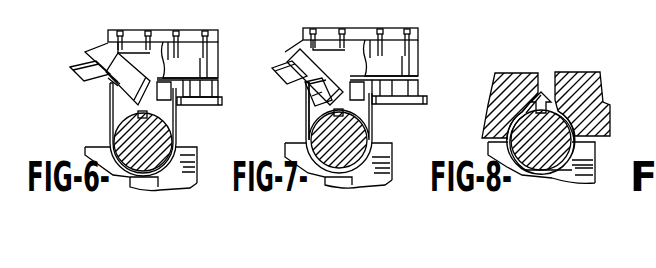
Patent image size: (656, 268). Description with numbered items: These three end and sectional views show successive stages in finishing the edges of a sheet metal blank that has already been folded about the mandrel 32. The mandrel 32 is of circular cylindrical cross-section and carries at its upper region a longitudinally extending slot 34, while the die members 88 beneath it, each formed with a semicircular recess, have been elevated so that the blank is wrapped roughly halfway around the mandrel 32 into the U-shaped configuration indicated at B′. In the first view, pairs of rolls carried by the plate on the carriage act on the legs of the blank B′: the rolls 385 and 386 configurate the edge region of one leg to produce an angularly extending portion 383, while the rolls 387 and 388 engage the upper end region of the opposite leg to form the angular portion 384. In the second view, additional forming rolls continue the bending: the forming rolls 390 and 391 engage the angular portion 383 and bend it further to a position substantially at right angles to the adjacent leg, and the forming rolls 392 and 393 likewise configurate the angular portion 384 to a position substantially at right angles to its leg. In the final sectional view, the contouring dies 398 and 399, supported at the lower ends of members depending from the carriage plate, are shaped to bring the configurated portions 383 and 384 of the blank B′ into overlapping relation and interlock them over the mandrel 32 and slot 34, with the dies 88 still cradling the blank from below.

In FIG. 6, the mandrel 32 is at (163, 136).
In FIG. 7, the mandrel 32 is at (362, 137).
In FIG. 8, the mandrel 32 is at (572, 133).
In FIG. 7, the longitudinally extending slot 34 is at (308, 132).
In FIG. 6, the die members 88 is at (180, 146).
In FIG. 7, the die members 88 is at (287, 152).
In FIG. 8, the die members 88 is at (587, 152).
In FIG. 6, the U-shaped blank B′ is at (110, 123).
In FIG. 7, the U-shaped blank B′ is at (373, 115).
In FIG. 8, the U-shaped blank B′ is at (597, 101).
In FIG. 6, the angular portion 383 is at (99, 69).
In FIG. 8, the angular portion 383 is at (539, 66).
In FIG. 6, the angular portion 384 is at (210, 86).
In FIG. 8, the angular portion 384 is at (543, 95).
In FIG. 6, the roll 385 is at (71, 76).
In FIG. 6, the roll 386 is at (110, 104).
In FIG. 6, the roll 387 is at (165, 78).
In FIG. 6, the roll 388 is at (222, 101).
In FIG. 7, the forming roll 390 is at (290, 53).
In FIG. 7, the forming roll 391 is at (318, 100).
In FIG. 7, the forming roll 392 is at (378, 78).
In FIG. 7, the forming roll 393 is at (415, 87).
In FIG. 8, the contouring die 398 is at (496, 72).
In FIG. 8, the contouring die 399 is at (573, 72).